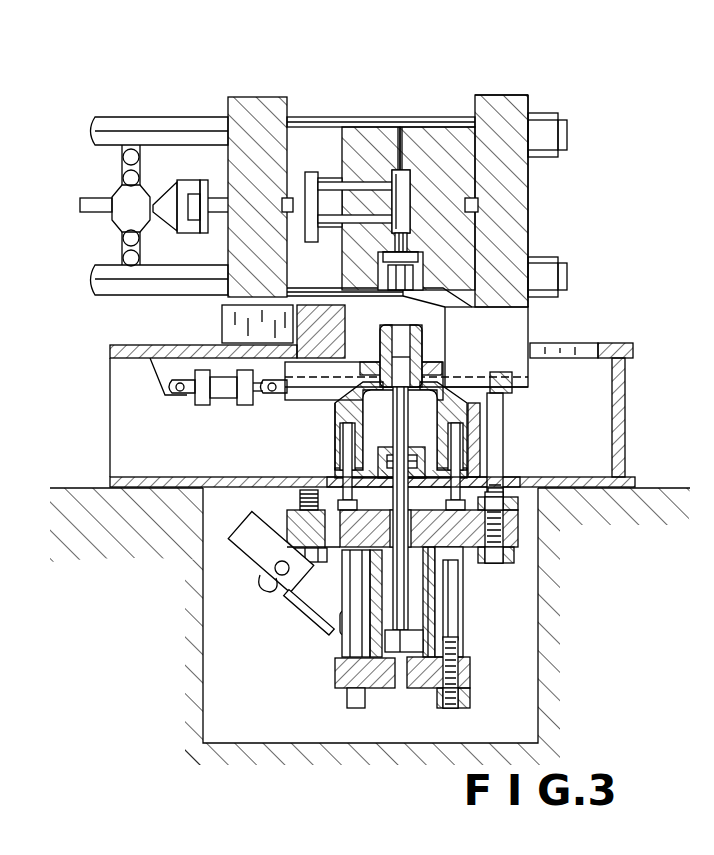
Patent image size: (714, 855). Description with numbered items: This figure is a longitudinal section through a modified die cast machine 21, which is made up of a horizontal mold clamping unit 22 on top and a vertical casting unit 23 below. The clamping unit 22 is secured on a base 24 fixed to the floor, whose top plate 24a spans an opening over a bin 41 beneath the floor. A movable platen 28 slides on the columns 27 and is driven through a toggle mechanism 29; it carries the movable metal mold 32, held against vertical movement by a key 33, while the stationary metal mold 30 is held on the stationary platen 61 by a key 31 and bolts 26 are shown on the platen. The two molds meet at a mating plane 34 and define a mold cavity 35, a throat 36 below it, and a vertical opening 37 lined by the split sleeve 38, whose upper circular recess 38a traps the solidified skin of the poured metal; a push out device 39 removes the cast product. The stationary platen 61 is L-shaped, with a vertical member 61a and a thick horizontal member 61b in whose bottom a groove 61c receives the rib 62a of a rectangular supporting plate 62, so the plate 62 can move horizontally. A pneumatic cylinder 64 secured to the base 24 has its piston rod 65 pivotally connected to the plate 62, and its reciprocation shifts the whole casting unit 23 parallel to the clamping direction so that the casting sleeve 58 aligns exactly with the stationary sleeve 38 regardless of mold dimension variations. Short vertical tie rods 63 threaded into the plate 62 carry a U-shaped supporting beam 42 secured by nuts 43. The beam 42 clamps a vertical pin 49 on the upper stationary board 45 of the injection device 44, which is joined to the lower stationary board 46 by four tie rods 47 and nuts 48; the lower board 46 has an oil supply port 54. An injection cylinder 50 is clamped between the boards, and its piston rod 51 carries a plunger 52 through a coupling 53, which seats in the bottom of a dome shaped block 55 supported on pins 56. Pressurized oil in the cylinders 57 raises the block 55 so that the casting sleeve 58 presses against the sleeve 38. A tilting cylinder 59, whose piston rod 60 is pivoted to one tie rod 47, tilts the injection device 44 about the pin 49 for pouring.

The die cast machine 21 is at (530, 92).
The horizontal mold clamping unit 22 is at (423, 72).
The vertical casting unit 23 is at (505, 617).
The base 24 is at (640, 345).
The frame top plate 24a is at (585, 343).
The bolts 26 is at (548, 113).
The columns 27 is at (168, 117).
The movable platen 28 is at (248, 97).
The toggle mechanism 29 is at (112, 183).
The stationary metal mold 30 is at (452, 128).
The key 31 is at (478, 205).
The movable metal mold 32 is at (375, 128).
The key 33 is at (287, 196).
The split or mating plane 34 is at (400, 127).
The mold cavity 35 is at (404, 172).
The throat 36 is at (395, 242).
The vertical opening 37 is at (405, 293).
The split sleeve 38 is at (380, 266).
The circular recess 38a is at (410, 256).
The push out device 39 is at (330, 178).
The bin 41 is at (538, 660).
The supporting beam 42 is at (520, 530).
The nuts 43 is at (290, 505).
The injection device 44 is at (330, 466).
The upper stationary board 45 is at (480, 470).
The lower stationary board 46 is at (428, 690).
The tie rods 47 is at (345, 655).
The nuts 48 is at (465, 650).
The vertical pin 49 is at (347, 555).
The injection cylinder 50 is at (434, 600).
The piston rod 51 is at (435, 580).
The plunger 52 is at (418, 430).
The coupling 53 is at (383, 447).
The oil supply port 54 is at (400, 690).
The dome shaped block 55 is at (335, 403).
The pins 56 is at (300, 496).
The cylinders 57 is at (505, 423).
The casting sleeve 58 is at (424, 333).
The tilting cylinder 59 is at (225, 538).
The piston rod 60 is at (330, 614).
The stationary platen 61 is at (542, 235).
The vertical member 61a is at (525, 172).
The horizontal member 61b is at (522, 315).
The groove 61c is at (530, 385).
The supporting plate 62 is at (283, 395).
The rib 62a is at (470, 375).
The vertical tie rods 63 is at (343, 430).
The pneumatic cylinder 64 is at (203, 405).
The piston rod 65 is at (255, 343).